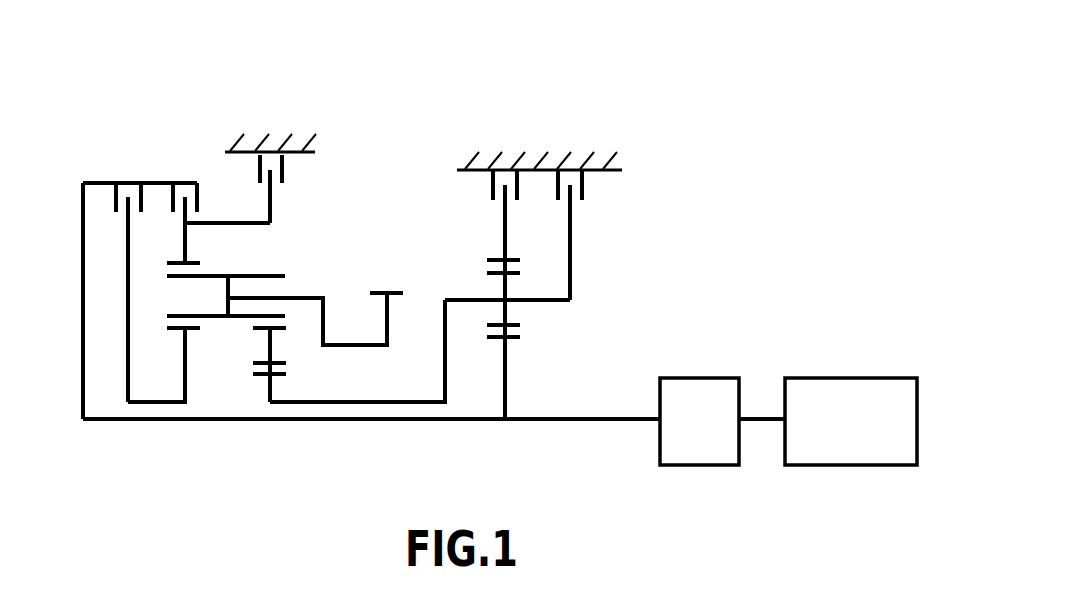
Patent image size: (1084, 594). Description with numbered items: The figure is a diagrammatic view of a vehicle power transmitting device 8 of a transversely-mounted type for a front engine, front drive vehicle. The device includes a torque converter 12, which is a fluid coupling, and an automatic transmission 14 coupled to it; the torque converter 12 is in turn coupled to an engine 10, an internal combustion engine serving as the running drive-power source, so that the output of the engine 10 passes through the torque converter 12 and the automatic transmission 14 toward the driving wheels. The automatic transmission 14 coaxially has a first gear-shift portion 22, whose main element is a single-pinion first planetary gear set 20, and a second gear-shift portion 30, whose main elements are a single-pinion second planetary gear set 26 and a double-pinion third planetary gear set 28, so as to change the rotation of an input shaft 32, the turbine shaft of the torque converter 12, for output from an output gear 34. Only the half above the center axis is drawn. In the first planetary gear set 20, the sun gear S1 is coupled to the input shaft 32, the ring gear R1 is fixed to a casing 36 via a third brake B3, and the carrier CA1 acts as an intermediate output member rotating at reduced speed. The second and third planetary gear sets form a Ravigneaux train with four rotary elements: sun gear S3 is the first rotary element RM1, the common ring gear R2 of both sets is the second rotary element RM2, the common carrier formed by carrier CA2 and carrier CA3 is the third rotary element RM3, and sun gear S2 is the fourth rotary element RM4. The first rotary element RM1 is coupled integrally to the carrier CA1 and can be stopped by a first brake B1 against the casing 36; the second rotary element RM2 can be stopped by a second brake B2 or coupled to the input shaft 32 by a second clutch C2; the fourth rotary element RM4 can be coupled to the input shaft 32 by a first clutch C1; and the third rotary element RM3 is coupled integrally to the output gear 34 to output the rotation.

The vehicle power transmitting device 8 is at (822, 184).
The engine 10 is at (832, 382).
The torque converter 12 is at (698, 382).
The automatic transmission 14 is at (607, 72).
The first planetary gear set 20 is at (497, 438).
The first gear-shift portion 22 is at (435, 177).
The second planetary gear set 26 is at (182, 428).
The third planetary gear set 28 is at (273, 430).
The second gear-shift portion 30 is at (342, 128).
The input shaft 32 is at (595, 423).
The output gear 34 is at (393, 290).
The casing 36 is at (265, 142).
The first clutch C1 is at (124, 278).
The second clutch C2 is at (182, 208).
The first brake B1 is at (592, 235).
The second brake B2 is at (288, 189).
The third brake B3 is at (488, 189).
The sun gear S1 is at (510, 340).
The sun gear S2 is at (190, 332).
The sun gear S3 is at (278, 377).
The ring gear R1 is at (515, 257).
The ring gear R2 is at (192, 262).
The carrier CA1 is at (572, 272).
The carrier CA2 is at (226, 296).
The carrier CA3 is at (297, 297).
The first rotary element RM1 is at (340, 420).
The second rotary element RM2 is at (230, 222).
The third rotary element RM3 is at (350, 347).
The fourth rotary element RM4 is at (185, 372).